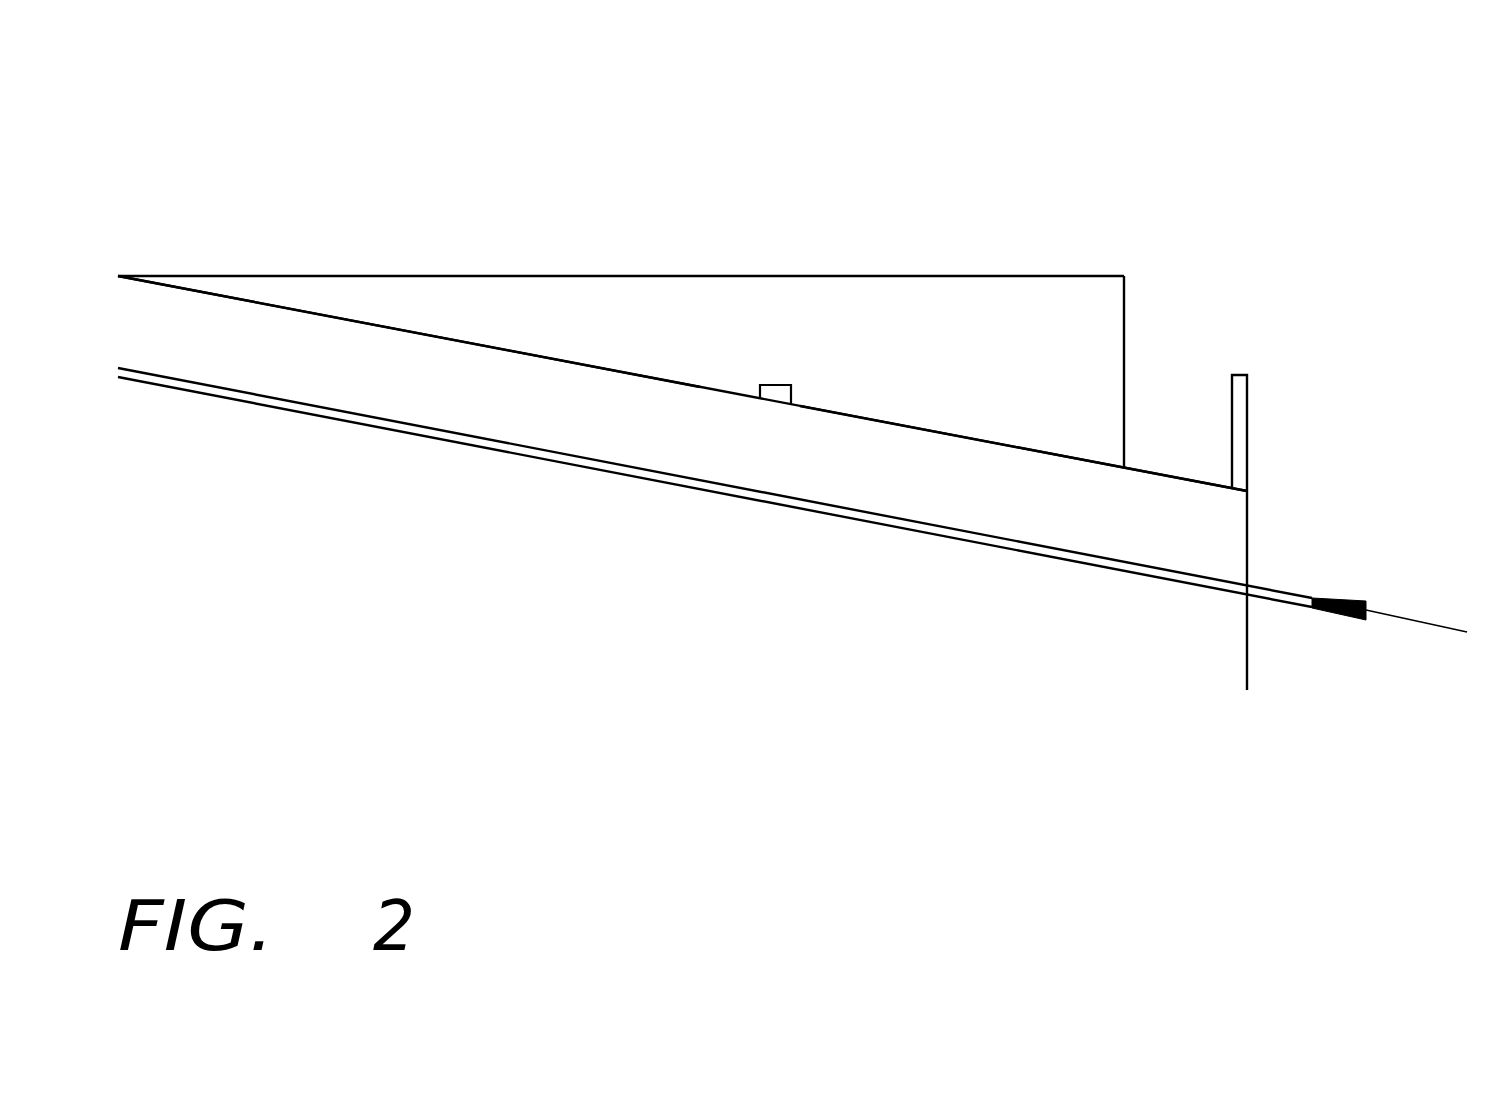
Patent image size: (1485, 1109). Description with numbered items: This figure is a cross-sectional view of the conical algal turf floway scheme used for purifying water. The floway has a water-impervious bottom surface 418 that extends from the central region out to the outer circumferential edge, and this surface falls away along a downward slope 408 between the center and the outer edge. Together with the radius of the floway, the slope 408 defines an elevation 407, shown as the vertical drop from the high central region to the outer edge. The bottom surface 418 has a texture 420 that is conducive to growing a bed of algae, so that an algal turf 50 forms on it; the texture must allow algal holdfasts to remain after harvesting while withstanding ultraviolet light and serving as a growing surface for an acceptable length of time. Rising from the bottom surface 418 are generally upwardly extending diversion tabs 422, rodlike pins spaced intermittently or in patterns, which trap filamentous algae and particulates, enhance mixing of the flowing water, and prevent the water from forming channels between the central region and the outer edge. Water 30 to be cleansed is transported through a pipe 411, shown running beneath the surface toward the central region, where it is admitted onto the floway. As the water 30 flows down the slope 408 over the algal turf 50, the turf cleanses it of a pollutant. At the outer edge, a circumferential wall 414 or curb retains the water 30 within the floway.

The water-impervious bottom surface 418 is at (185, 288).
The texture 420 is at (185, 288).
The algal turf 50 is at (498, 348).
The diversion tabs 422 is at (778, 390).
The downward slope 408 is at (951, 435).
The elevation 407 is at (1125, 350).
The circumferential wall 414 is at (1240, 390).
The pipe 411 is at (750, 495).
The water 30 is at (1405, 623).